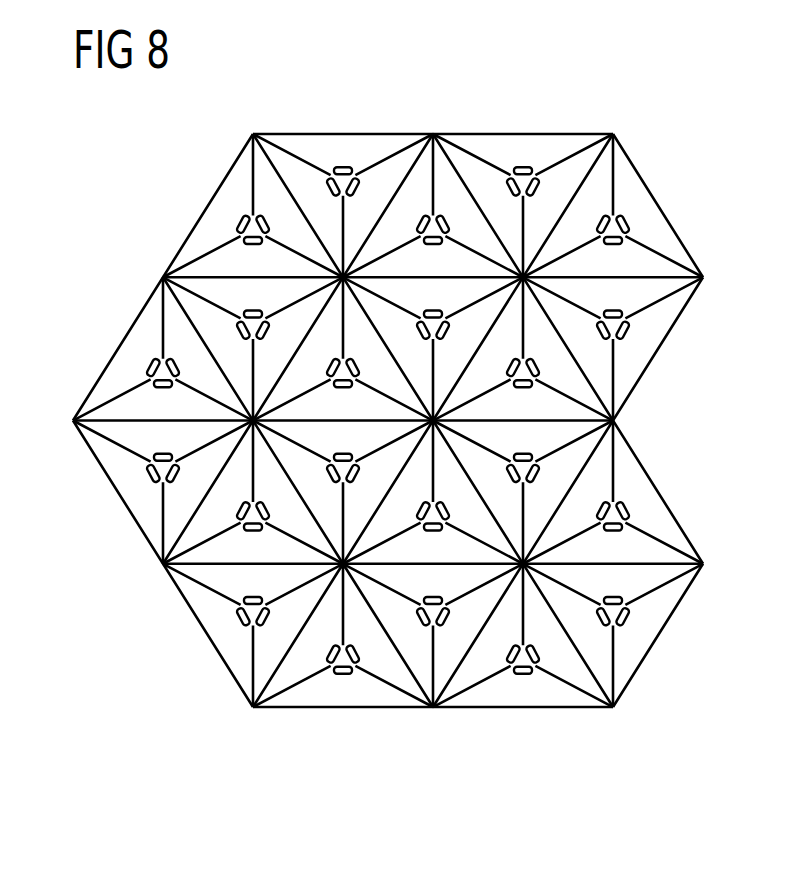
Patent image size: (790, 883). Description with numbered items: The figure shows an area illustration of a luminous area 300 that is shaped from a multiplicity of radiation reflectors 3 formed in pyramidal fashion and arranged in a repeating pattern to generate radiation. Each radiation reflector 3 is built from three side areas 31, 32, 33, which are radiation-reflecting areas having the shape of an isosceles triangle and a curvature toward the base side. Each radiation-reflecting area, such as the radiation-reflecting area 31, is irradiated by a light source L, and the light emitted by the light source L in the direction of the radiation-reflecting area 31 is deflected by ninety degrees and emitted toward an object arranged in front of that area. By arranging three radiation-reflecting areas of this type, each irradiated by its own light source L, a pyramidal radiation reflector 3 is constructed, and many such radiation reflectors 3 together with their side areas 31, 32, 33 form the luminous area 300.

The luminous area 300 is at (578, 100).
The radiation reflector 3 is at (377, 763).
The radiation-reflecting area 31 is at (343, 697).
The side area 32 is at (288, 678).
The side area 33 is at (402, 677).
The light source L is at (365, 632).